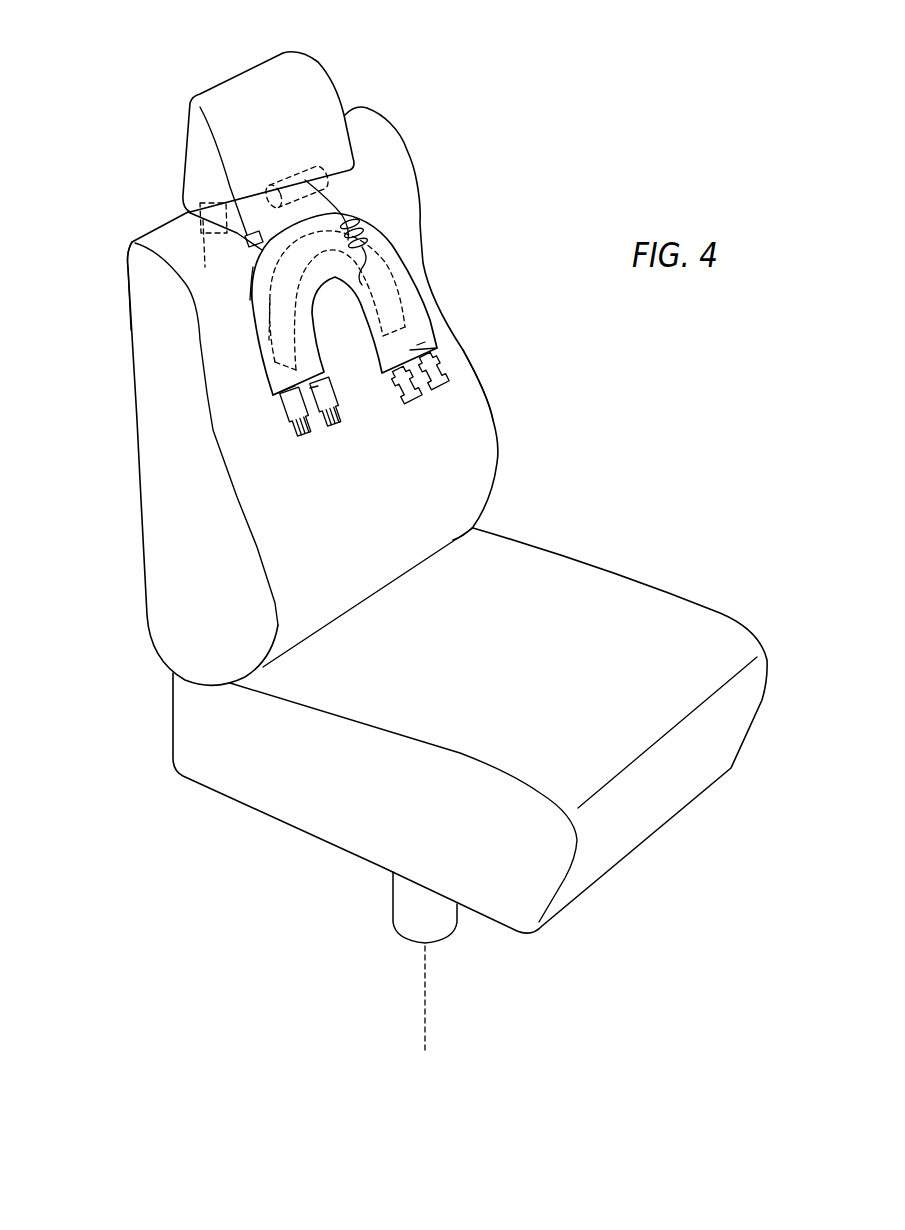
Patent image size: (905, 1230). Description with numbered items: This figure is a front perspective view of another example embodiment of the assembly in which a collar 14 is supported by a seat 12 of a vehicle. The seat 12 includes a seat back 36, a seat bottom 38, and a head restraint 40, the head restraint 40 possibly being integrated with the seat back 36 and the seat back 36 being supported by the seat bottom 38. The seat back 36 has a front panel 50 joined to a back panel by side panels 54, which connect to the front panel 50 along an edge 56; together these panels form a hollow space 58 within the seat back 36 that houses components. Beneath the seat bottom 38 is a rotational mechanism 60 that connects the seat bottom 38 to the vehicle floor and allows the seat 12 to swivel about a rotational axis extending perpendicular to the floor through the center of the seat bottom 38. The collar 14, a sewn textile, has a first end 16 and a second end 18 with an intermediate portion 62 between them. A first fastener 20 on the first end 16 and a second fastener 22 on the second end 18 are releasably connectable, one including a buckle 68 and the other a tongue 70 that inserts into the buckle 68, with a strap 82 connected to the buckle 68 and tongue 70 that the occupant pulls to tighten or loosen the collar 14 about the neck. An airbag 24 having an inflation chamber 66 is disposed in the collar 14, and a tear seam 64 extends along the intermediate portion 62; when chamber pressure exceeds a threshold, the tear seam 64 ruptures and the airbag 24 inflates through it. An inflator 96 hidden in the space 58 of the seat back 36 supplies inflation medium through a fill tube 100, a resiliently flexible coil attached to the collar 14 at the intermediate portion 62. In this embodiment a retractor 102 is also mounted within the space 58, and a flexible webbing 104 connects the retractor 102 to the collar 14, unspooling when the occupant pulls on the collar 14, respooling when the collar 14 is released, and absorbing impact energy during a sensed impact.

The seat 12 is at (467, 210).
The collar 14 is at (273, 372).
The first end 16 is at (447, 347).
The second end 18 is at (287, 407).
The first fastener 20 is at (452, 373).
The second fastener 22 is at (285, 423).
The airbag 24 is at (402, 298).
The seat back 36 is at (132, 482).
The seat bottom 38 is at (603, 565).
The head restraint 40 is at (205, 97).
The front panel 50 is at (457, 495).
The side panels 54 is at (177, 530).
The edge 56 is at (127, 268).
The space 58 is at (205, 267).
The rotational mechanism 60 is at (410, 903).
The intermediate portion 62 is at (268, 323).
The tear seam 64 is at (383, 227).
The inflation chamber 66 is at (267, 347).
The buckle 68 is at (438, 405).
The tongue 70 is at (333, 437).
The strap 82 is at (317, 387).
The inflator 96 is at (297, 167).
The fill tube 100 is at (373, 226).
The retractor 102 is at (203, 205).
The flexible webbing 104 is at (250, 247).